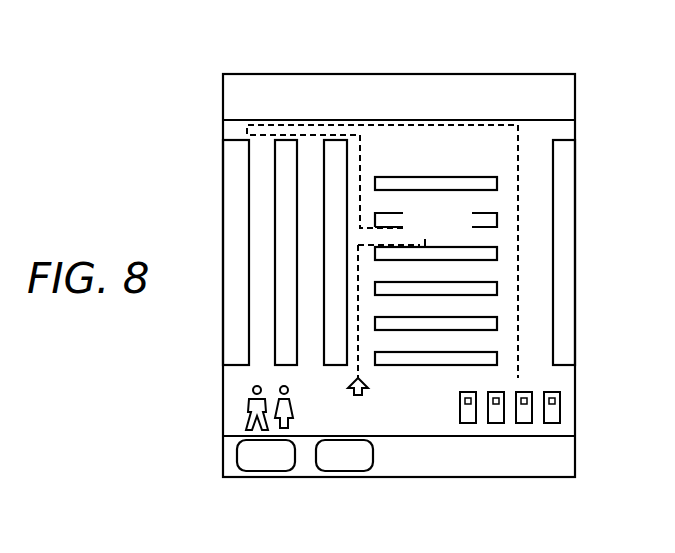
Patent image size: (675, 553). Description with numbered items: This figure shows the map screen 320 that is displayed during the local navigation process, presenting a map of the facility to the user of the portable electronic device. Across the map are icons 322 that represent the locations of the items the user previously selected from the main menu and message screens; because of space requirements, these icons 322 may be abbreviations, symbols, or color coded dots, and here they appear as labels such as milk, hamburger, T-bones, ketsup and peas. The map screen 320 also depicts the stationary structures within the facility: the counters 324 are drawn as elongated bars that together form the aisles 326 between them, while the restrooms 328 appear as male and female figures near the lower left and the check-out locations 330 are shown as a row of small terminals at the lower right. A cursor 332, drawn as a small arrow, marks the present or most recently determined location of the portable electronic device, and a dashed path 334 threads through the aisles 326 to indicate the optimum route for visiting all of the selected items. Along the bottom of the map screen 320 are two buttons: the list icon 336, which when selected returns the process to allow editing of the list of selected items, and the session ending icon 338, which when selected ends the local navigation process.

The map screen 320 is at (206, 360).
The icons 322 is at (386, 84).
The counters 324 is at (428, 177).
The aisles 326 is at (475, 202).
The restrooms 328 is at (245, 406).
The check-out locations 330 is at (496, 424).
The cursor 332 is at (368, 392).
The path 334 is at (362, 185).
The list icon 336 is at (272, 472).
The session ending icon 338 is at (348, 472).